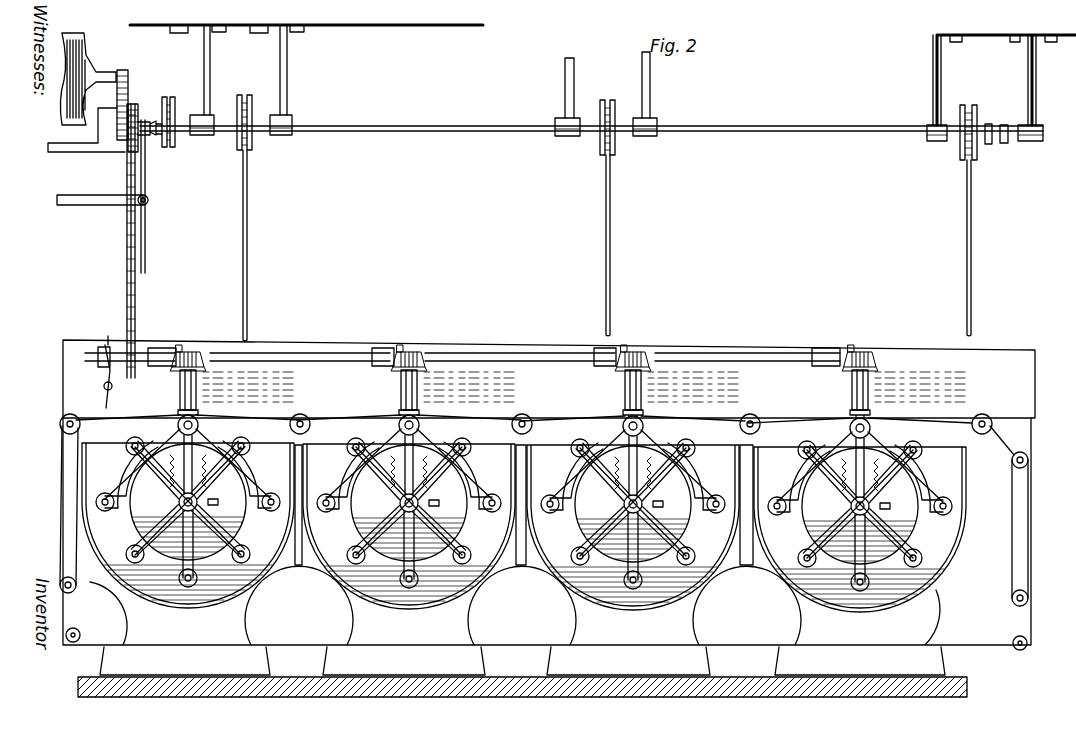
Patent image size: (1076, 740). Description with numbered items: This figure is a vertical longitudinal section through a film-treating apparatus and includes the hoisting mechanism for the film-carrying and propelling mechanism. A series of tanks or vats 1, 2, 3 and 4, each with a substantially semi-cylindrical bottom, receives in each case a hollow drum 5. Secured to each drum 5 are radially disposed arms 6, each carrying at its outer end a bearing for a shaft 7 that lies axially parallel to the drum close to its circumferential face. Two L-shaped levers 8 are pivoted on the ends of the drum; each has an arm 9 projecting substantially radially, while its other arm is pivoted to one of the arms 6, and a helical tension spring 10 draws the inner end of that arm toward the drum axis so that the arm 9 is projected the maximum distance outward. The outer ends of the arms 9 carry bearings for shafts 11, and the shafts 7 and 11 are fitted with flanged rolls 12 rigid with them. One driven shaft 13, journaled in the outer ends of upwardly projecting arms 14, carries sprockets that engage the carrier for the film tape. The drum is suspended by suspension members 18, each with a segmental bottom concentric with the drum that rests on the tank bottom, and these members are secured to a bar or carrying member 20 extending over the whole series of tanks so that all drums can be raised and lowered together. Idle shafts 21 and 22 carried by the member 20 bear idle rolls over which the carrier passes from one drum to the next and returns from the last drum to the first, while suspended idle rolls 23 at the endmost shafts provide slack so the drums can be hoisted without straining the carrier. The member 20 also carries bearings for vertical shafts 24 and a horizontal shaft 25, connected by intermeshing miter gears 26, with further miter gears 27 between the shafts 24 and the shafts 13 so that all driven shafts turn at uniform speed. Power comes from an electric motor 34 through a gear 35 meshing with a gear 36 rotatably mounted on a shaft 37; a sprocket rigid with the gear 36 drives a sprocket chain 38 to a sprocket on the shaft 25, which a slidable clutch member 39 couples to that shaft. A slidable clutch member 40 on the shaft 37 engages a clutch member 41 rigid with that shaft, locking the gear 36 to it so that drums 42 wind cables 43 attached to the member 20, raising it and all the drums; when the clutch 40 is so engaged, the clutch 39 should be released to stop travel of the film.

The tank or vat 1 is at (956, 566).
The tank or vat 2 is at (712, 566).
The tank or vat 3 is at (486, 566).
The tank or vat 4 is at (262, 582).
The hollow drum 5 is at (212, 520).
The radially disposed arms 6 is at (172, 540).
The shaft 7 is at (180, 598).
The L-shaped arms or levers 8 is at (128, 470).
The arm of lever 9 is at (335, 485).
The helical tension spring 10 is at (672, 452).
The shaft 11 is at (96, 505).
The flanged rolls 12 is at (240, 560).
The driven shaft 13 is at (170, 430).
The upwardly projecting arms 14 is at (440, 450).
The suspension members 18 is at (148, 572).
The bar or carrying member 20 is at (902, 352).
The idle shaft 21 is at (60, 426).
The idle shaft 22 is at (1030, 458).
The suspended idle rolls 23 is at (62, 584).
The vertical shafts 24 is at (178, 392).
The horizontal shaft 25 is at (736, 352).
The intermeshing miter gears 26 is at (196, 352).
The intermeshing miter gears 27 is at (200, 420).
The electric motor or source of power 34 is at (78, 45).
The gear 35 is at (138, 60).
The gear 36 is at (134, 108).
The shaft 37 is at (398, 128).
The sprocket chain 38 is at (136, 290).
The slidable clutch member 39 is at (106, 340).
The slidable clutch member 40 is at (150, 135).
The clutch member 41 is at (170, 110).
The drum 42 is at (244, 98).
The cables 43 is at (248, 212).